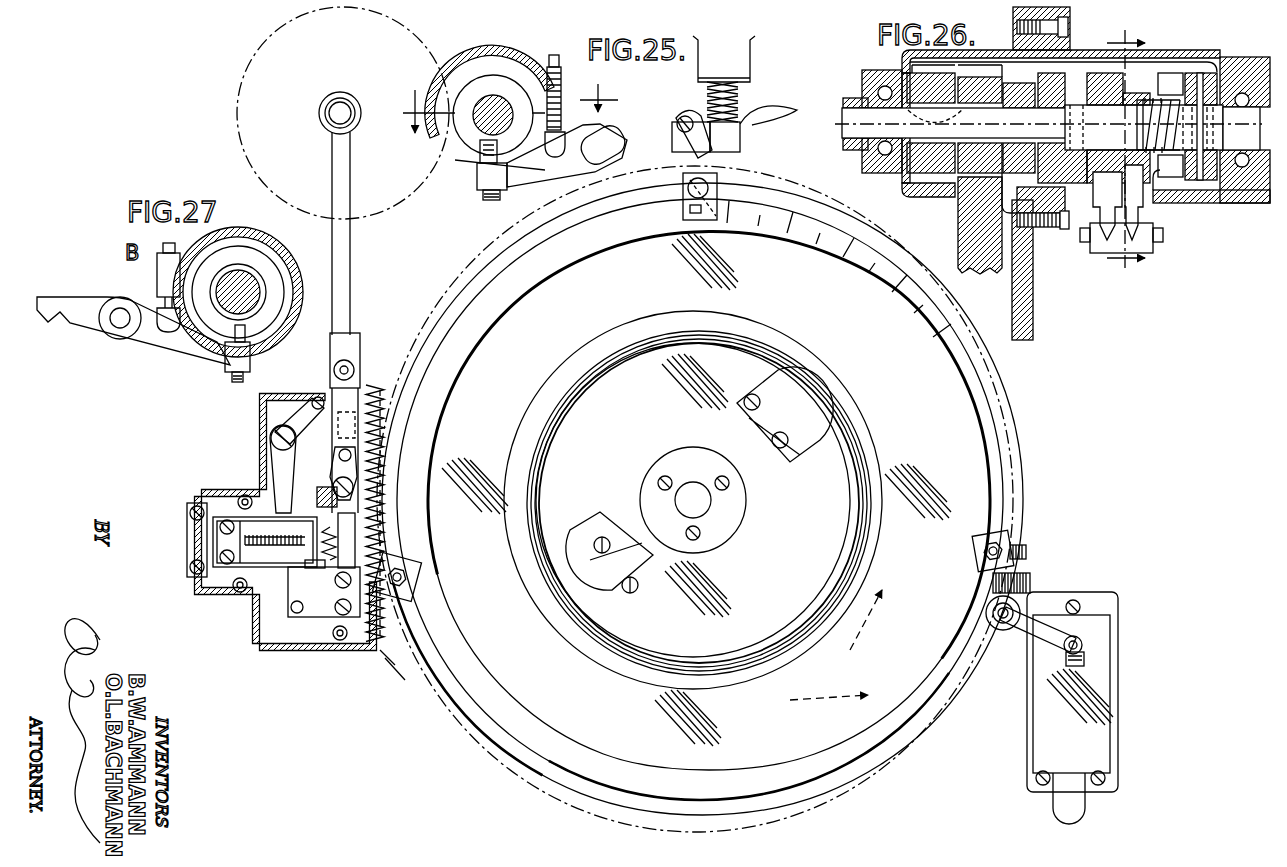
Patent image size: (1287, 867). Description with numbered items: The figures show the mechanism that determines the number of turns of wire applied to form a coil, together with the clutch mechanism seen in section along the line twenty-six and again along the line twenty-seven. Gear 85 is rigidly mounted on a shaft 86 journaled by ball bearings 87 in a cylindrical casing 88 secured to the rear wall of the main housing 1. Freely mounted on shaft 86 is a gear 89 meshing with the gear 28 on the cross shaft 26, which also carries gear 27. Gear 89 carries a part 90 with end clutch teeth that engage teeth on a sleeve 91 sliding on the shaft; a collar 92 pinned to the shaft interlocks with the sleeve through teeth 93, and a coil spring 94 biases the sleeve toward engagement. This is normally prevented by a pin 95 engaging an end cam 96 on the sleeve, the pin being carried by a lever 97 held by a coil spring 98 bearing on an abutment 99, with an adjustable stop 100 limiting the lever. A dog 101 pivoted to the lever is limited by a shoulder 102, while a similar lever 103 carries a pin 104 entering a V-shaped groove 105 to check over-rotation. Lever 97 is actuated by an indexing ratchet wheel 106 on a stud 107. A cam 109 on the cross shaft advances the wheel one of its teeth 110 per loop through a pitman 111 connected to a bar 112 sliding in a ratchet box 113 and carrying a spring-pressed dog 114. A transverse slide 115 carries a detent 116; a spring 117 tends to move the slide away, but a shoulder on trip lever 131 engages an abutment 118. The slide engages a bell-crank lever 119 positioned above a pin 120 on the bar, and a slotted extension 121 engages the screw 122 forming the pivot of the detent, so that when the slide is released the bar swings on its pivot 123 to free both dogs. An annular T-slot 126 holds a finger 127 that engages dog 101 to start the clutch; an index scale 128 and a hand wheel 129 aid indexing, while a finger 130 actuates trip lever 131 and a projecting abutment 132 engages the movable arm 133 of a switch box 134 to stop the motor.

In FIG. 26, the main housing 1 is at (1033, 326).
In FIG. 25, the cross shaft 26 is at (395, 86).
In FIG. 26, the gear 27 is at (1126, 149).
In FIG. 25, the gear 28 is at (433, 44).
In FIG. 26, the gear 28 is at (966, 218).
In FIG. 26, the gear 85 is at (905, 190).
In FIG. 25, the shaft 86 is at (492, 94).
In FIG. 26, the shaft 86 is at (1048, 127).
In FIG. 27, the shaft 86 is at (256, 288).
In FIG. 26, the ball bearings 87 is at (1248, 33).
In FIG. 25, the cylindrical casing 88 is at (519, 58).
In FIG. 26, the cylindrical casing 88 is at (1240, 195).
In FIG. 27, the cylindrical casing 88 is at (286, 262).
In FIG. 26, the gear 89 is at (995, 92).
In FIG. 26, the part having end clutch teeth 90 is at (1045, 128).
In FIG. 25, the sleeve 91 is at (514, 99).
In FIG. 26, the sleeve 91 is at (1108, 80).
In FIG. 27, the sleeve 91 is at (262, 302).
In FIG. 26, the collar 92 is at (1207, 72).
In FIG. 26, the teeth 93 is at (1175, 80).
In FIG. 26, the coil spring 94 is at (1158, 116).
In FIG. 25, the pin 95 is at (507, 165).
In FIG. 26, the pin 95 is at (1148, 150).
In FIG. 27, the pin 95 is at (228, 342).
In FIG. 26, the end cam 96 is at (1130, 180).
In FIG. 27, the end cam 96 is at (246, 332).
In FIG. 25, the lever 97 is at (583, 158).
In FIG. 26, the lever 97 is at (1137, 246).
In FIG. 27, the lever 97 is at (150, 342).
In FIG. 25, the coil spring 98 is at (739, 110).
In FIG. 25, the abutment 99 is at (735, 63).
In FIG. 25, the adjustable stop 100 is at (566, 86).
In FIG. 25, the dog 101 is at (683, 131).
In FIG. 25, the shoulder 102 is at (742, 135).
In FIG. 26, the lever 103 is at (1100, 246).
In FIG. 25, the pin 104 is at (482, 152).
In FIG. 26, the pin 104 is at (1108, 182).
In FIG. 26, the V-shaped groove 105 is at (1090, 210).
In FIG. 25, the indexing ratchet wheel 106 is at (709, 500).
In FIG. 25, the stud 107 is at (702, 501).
In FIG. 25, the cam 109 is at (340, 113).
In FIG. 25, the teeth 110 is at (370, 432).
In FIG. 25, the pitman 111 is at (350, 250).
In FIG. 25, the bar 112 is at (340, 396).
In FIG. 25, the ratchet box 113 is at (284, 425).
In FIG. 25, the spring-pressed dog 114 is at (331, 481).
In FIG. 25, the transverse slide 115 is at (263, 553).
In FIG. 25, the detent 116 is at (358, 523).
In FIG. 25, the spring 117 is at (190, 538).
In FIG. 25, the abutment 118 is at (308, 560).
In FIG. 25, the bell-crank lever 119 is at (280, 462).
In FIG. 25, the pin 120 is at (397, 450).
In FIG. 25, the slotted extension 121 is at (360, 538).
In FIG. 25, the screw 122 is at (347, 552).
In FIG. 25, the pivot 123 is at (348, 362).
In FIG. 25, the annular T-slot 126 is at (457, 698).
In FIG. 25, the finger 127 is at (690, 195).
In FIG. 25, the index scale 128 is at (695, 499).
In FIG. 25, the hand wheel 129 is at (866, 476).
In FIG. 25, the finger 130 is at (410, 580).
In FIG. 25, the trip lever 131 is at (382, 665).
In FIG. 25, the projecting abutment 132 is at (972, 547).
In FIG. 25, the movable arm 133 is at (1049, 632).
In FIG. 25, the switch box 134 is at (1072, 708).